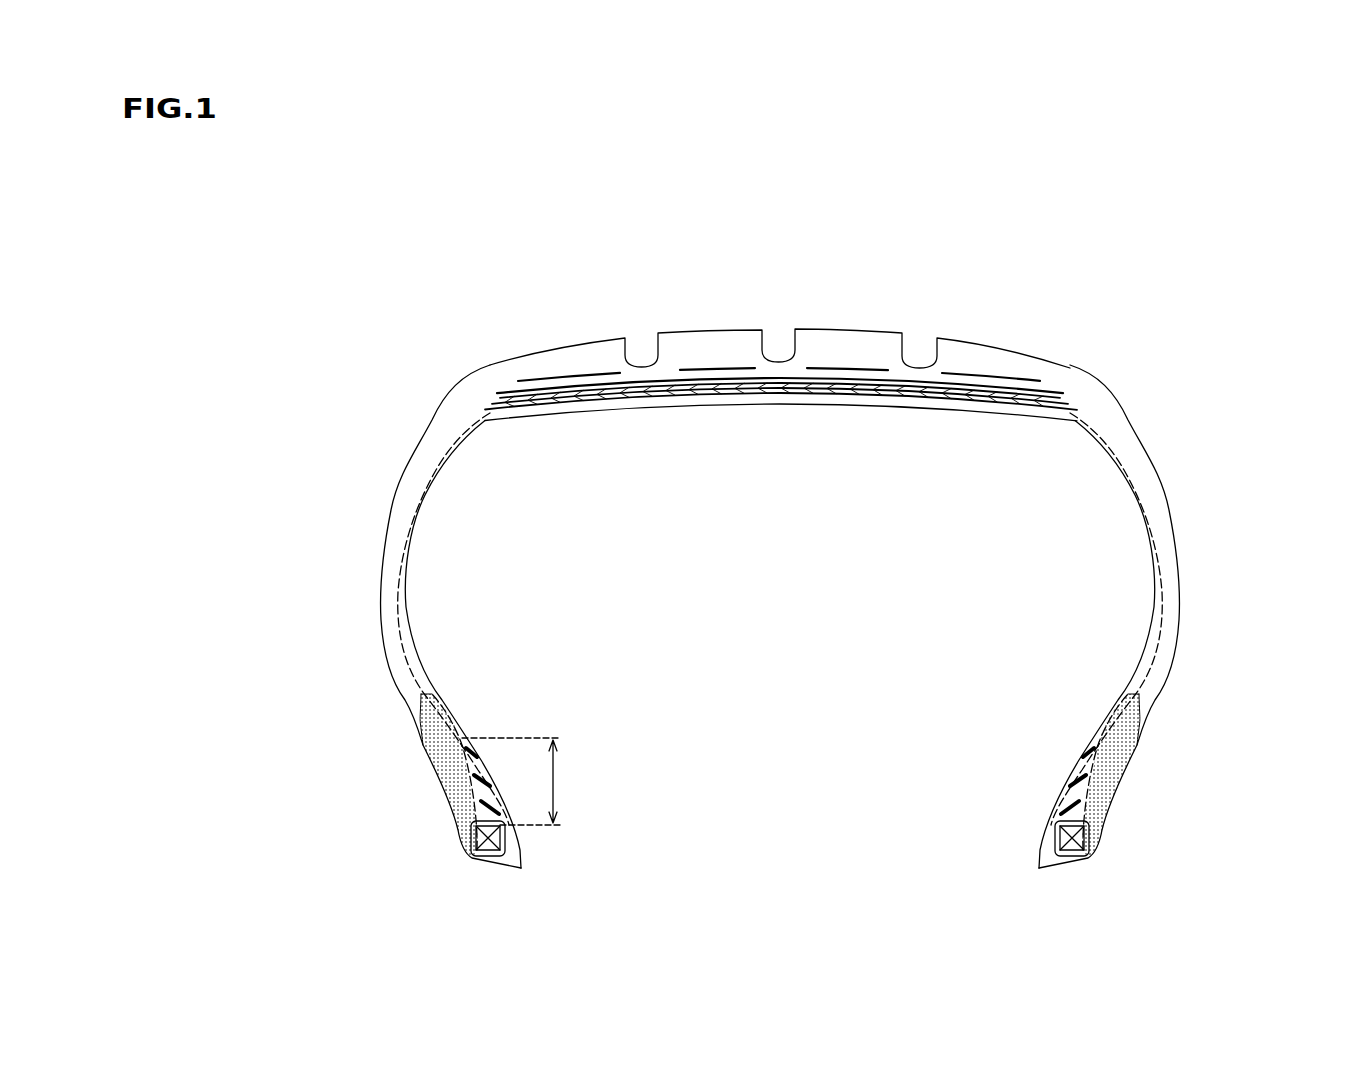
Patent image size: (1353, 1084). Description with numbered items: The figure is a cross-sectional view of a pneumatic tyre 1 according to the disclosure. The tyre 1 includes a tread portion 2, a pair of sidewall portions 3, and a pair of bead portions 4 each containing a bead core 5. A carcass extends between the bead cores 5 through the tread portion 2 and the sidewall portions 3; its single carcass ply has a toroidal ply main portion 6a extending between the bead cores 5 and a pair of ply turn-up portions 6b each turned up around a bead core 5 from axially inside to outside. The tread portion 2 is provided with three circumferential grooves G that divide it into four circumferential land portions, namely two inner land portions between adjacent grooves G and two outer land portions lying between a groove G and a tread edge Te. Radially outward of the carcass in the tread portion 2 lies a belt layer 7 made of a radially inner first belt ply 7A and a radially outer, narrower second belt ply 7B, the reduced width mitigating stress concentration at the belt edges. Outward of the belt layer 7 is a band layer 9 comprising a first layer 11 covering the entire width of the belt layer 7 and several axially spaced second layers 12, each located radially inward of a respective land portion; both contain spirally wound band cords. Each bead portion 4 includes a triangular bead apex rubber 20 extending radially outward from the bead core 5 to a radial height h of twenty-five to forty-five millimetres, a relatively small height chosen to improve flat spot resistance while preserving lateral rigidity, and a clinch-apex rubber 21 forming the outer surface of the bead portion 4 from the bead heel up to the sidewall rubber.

The pneumatic tyre 1 is at (1163, 424).
The tread portion 2 is at (864, 323).
The sidewall portion 3 is at (358, 615).
The bead portion 4 is at (773, 805).
The bead core 5 is at (507, 838).
The ply main portion 6a is at (1083, 738).
The ply turn-up portion 6b is at (780, 772).
The belt layer 7 is at (781, 459).
The first belt ply 7A is at (630, 484).
The second belt ply 7B is at (650, 398).
The band layer 9 is at (780, 276).
The first layer 11 is at (587, 390).
The second layer 12 is at (548, 381).
The bead apex rubber 20 is at (483, 800).
The clinch-apex rubber 21 is at (442, 744).
The circumferential groove G is at (646, 350).
The tread edge Te is at (489, 363).
The radial height of the bead apex rubber h is at (518, 781).